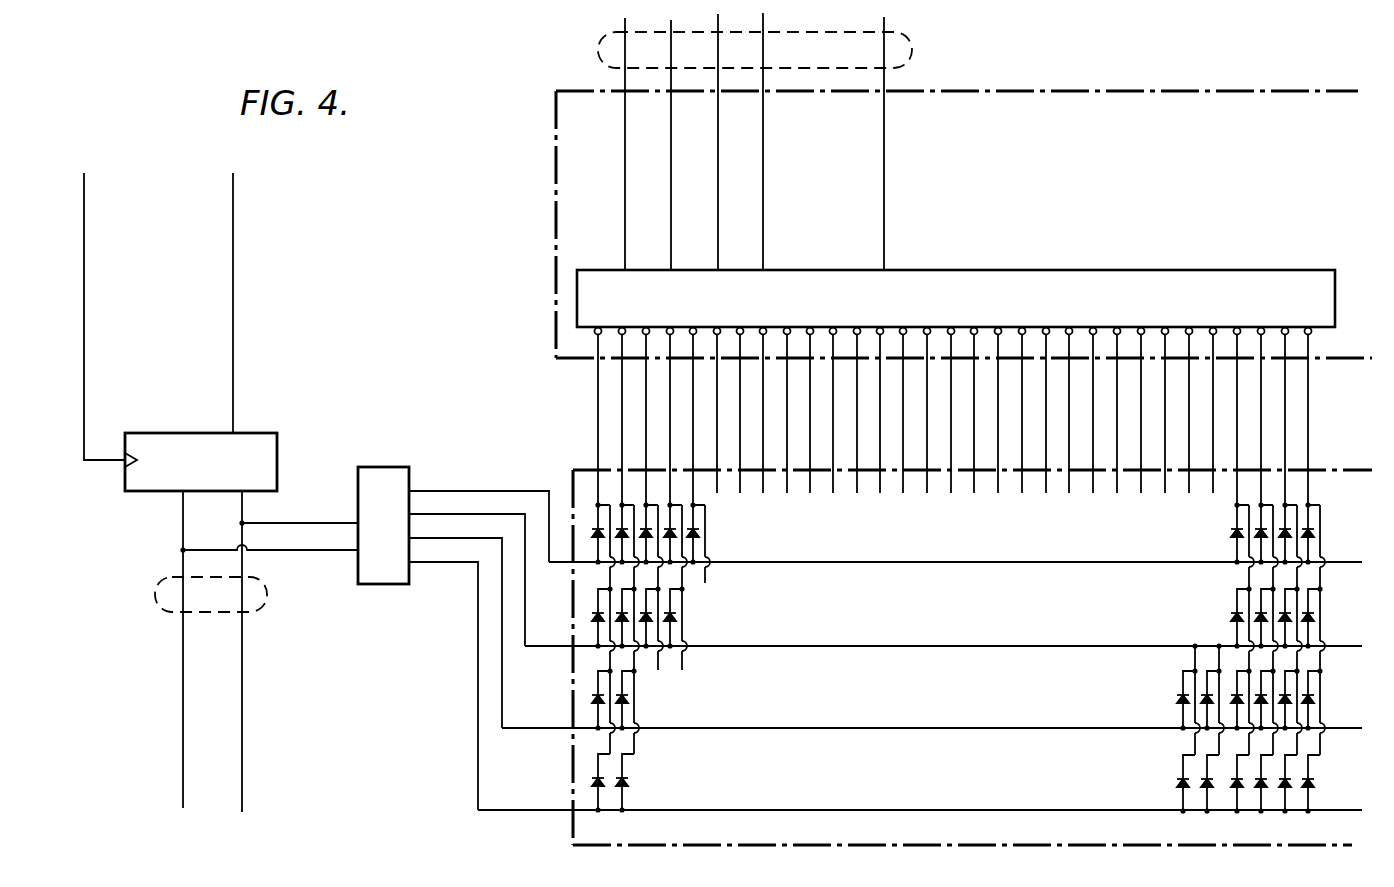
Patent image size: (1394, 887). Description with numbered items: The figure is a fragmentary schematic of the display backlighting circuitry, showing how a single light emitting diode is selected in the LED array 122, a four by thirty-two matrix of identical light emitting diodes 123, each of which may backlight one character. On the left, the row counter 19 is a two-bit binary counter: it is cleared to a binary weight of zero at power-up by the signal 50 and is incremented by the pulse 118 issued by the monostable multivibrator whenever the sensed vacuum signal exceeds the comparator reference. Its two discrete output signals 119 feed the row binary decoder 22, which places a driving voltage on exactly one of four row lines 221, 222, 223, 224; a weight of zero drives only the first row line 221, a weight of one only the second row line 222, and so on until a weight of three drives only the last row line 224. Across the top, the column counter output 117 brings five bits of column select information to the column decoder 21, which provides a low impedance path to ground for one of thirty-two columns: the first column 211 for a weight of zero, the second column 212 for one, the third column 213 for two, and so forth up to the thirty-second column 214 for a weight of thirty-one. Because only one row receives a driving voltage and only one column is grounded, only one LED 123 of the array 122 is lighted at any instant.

The column counter output 117 is at (600, 38).
The pulse 118 is at (84, 275).
The signal 50 is at (233, 273).
The row counter 19 is at (277, 449).
The row counter output 119 is at (267, 597).
The row binary decoder 22 is at (388, 467).
The column decoder 21 is at (553, 226).
The first column 211 is at (598, 386).
The second column 212 is at (622, 410).
The third column 213 is at (646, 433).
The thirty-second column 214 is at (1310, 436).
The first row driving line 221 is at (465, 488).
The second row driving line 222 is at (472, 518).
The third row driving line 223 is at (449, 541).
The fourth row driving line 224 is at (478, 643).
The LED array 122 is at (712, 853).
The light emitting diodes 123 is at (592, 701).